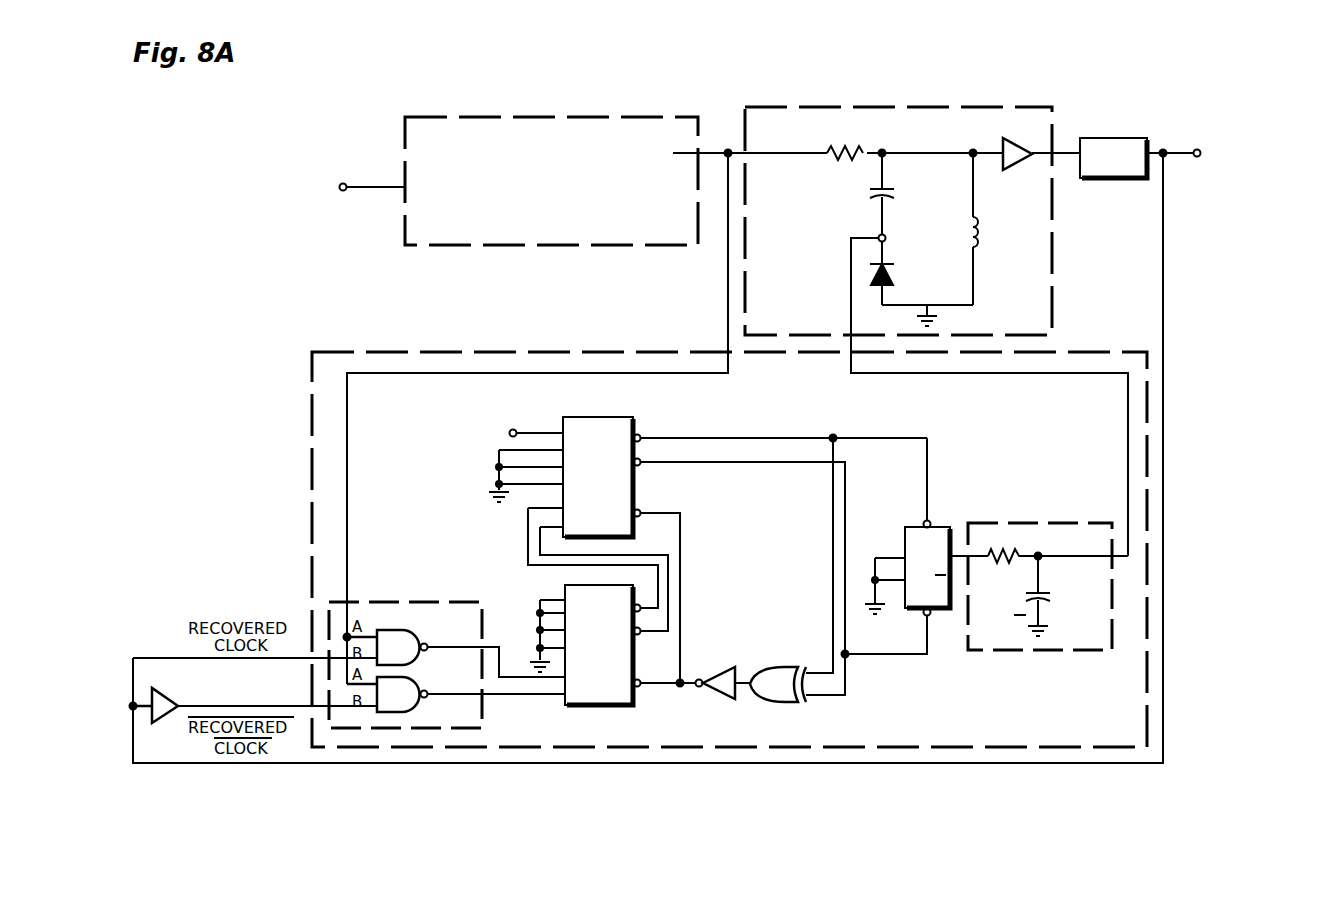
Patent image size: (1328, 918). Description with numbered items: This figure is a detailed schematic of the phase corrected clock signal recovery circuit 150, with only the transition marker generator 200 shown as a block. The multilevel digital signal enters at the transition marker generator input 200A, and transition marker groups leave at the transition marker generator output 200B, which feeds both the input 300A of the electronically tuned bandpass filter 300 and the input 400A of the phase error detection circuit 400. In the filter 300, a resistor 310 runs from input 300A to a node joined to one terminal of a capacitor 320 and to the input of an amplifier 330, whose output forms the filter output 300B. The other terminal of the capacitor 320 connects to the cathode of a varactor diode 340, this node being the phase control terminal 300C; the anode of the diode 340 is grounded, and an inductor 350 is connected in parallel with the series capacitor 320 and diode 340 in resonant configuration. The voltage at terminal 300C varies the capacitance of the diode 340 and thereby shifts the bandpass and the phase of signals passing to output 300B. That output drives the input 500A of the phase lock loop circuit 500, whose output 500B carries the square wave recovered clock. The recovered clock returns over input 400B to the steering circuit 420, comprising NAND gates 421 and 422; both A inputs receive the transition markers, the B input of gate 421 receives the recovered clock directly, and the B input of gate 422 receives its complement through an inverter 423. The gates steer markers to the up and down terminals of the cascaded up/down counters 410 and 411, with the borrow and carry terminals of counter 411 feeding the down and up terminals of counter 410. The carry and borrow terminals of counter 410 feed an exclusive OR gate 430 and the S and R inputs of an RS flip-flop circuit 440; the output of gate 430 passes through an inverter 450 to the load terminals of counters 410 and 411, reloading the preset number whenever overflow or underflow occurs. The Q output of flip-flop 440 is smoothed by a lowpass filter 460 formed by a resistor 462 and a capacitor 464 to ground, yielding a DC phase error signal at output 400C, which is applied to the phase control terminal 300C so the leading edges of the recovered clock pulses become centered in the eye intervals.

The phase corrected clock signal recovery circuit 150 is at (677, 97).
The transition marker generator 200 is at (503, 117).
The transition marker generator input 200A is at (333, 192).
The transition marker generator output 200B is at (692, 152).
The electronically tuned bandpass filter 300 is at (955, 107).
The filter input 300A is at (740, 153).
The filter output 300B is at (1054, 152).
The phase control terminal 300C is at (878, 237).
The resistor 310 is at (860, 153).
The capacitor 320 is at (887, 197).
The amplifier 330 is at (1006, 142).
The varactor diode 340 is at (887, 271).
The inductor 350 is at (978, 228).
The phase error detection circuit 400 is at (311, 522).
The phase adjustment circuit input 400A is at (720, 351).
The recovered clock input 400B is at (290, 705).
The phase error detection circuit output 400C is at (851, 355).
The up/down counter 410 is at (612, 420).
The up/down counter 411 is at (612, 708).
The steering circuit 420 is at (402, 608).
The NAND gate 421 is at (406, 646).
The NAND gate 422 is at (406, 687).
The inverter 423 is at (168, 699).
The exclusive OR gate 430 is at (782, 710).
The RS flip-flop circuit 440 is at (906, 538).
The inverter 450 is at (716, 698).
The lowpass filter 460 is at (1040, 523).
The resistor 462 is at (1008, 552).
The capacitor 464 is at (1044, 594).
The phase lock loop circuit 500 is at (1098, 140).
The PLL input 500A is at (1078, 160).
The phase lock loop output 500B is at (1162, 150).